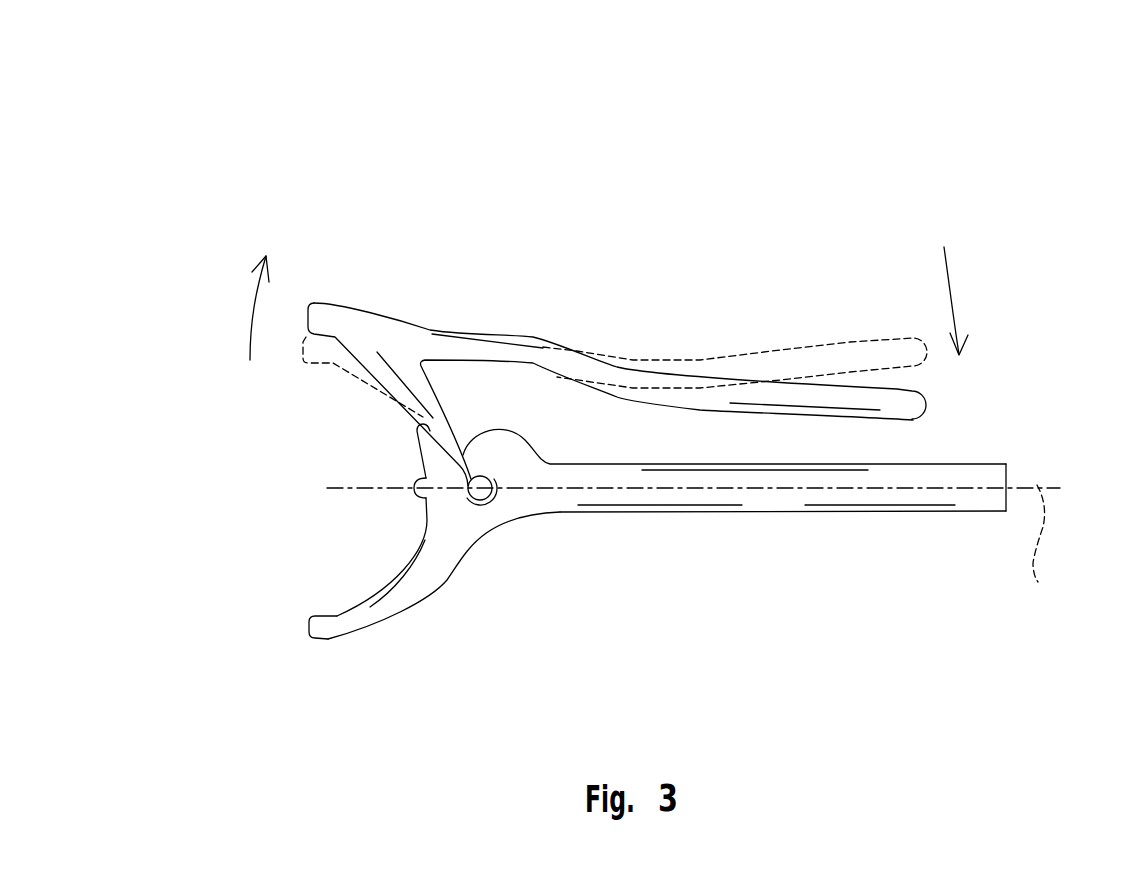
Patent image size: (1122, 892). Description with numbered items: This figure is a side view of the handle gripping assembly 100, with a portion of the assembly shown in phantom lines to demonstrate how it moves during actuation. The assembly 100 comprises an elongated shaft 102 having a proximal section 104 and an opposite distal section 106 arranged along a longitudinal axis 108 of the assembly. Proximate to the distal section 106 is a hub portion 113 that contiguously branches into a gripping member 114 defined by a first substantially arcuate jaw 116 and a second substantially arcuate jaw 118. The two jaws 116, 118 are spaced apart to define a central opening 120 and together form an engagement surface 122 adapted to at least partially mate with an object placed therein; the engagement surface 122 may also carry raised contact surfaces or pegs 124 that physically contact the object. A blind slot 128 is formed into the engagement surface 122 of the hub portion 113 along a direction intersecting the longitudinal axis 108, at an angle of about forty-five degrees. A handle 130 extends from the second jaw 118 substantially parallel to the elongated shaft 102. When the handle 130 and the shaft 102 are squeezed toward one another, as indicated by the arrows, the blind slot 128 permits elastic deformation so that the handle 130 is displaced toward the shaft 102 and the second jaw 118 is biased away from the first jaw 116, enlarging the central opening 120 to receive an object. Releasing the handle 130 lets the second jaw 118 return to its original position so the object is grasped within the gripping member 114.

The handle gripping assembly 100 is at (718, 170).
The elongated shaft 102 is at (778, 503).
The proximal section 104 is at (992, 452).
The distal section 106 is at (508, 546).
The longitudinal axis 108 is at (1041, 550).
The hub portion 113 is at (449, 528).
The gripping member 114 is at (277, 528).
The first substantially arcuate jaw 116 is at (333, 630).
The second substantially arcuate jaw 118 is at (368, 315).
The central opening 120 is at (225, 437).
The engagement surface 122 is at (347, 362).
The raised contact surfaces or pegs 124 is at (300, 337).
The blind slot 128 is at (452, 454).
The handle 130 is at (925, 407).